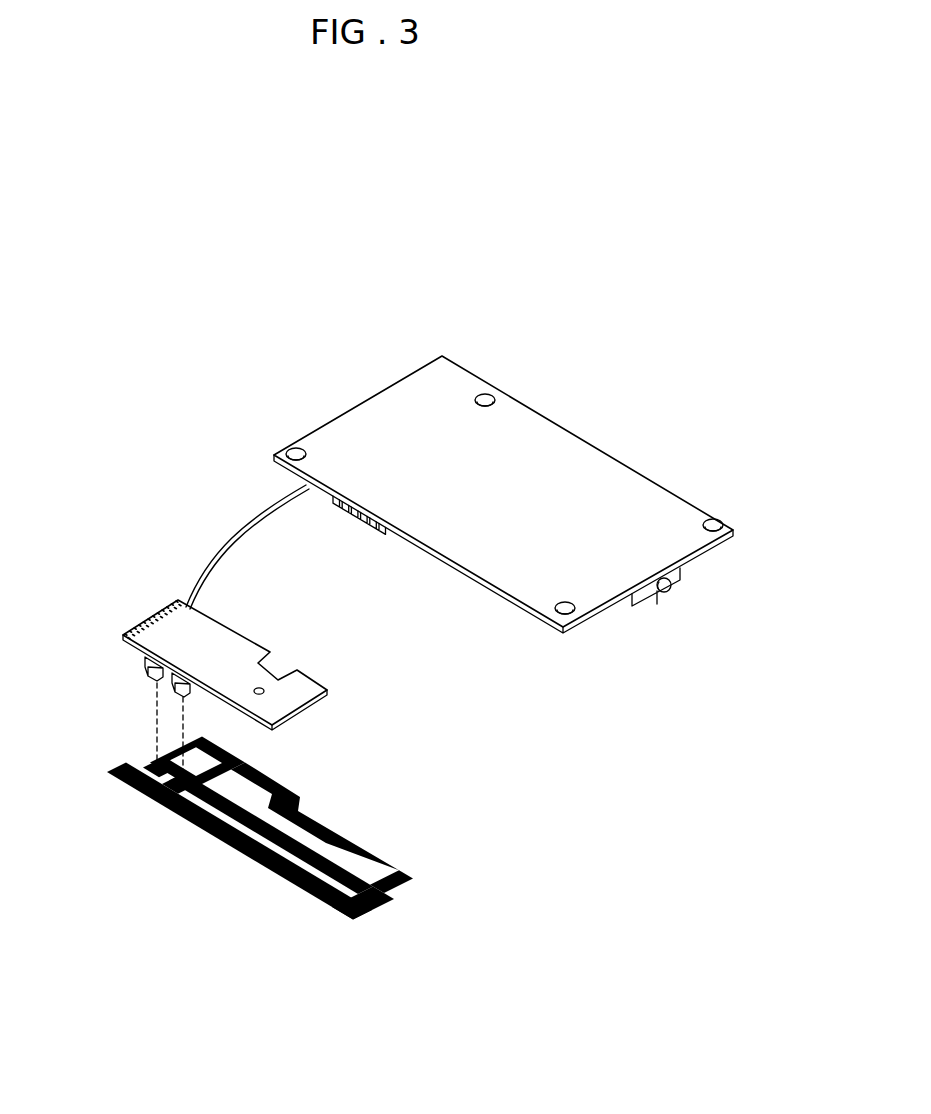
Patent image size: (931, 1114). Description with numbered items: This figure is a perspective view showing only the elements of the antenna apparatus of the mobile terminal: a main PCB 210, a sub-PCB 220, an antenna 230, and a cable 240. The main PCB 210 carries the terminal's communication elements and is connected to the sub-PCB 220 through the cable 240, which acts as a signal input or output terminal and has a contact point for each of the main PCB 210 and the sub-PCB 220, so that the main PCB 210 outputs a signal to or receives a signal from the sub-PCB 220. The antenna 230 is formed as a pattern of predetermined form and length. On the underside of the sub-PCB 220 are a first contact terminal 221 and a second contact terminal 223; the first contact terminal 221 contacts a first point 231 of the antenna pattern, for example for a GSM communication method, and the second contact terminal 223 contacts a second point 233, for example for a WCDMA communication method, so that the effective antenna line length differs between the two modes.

The main PCB 210 is at (535, 453).
The sub-PCB 220 is at (290, 698).
The first contact terminal 221 is at (150, 678).
The second contact terminal 223 is at (172, 695).
The antenna 230 is at (383, 898).
The first point 231 is at (150, 765).
The second point 233 is at (160, 786).
The cable 240 is at (233, 533).